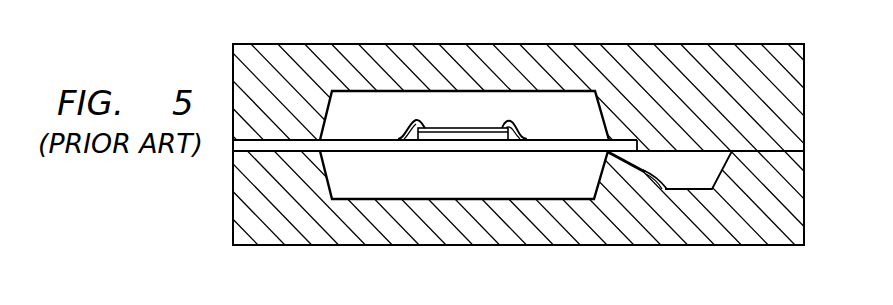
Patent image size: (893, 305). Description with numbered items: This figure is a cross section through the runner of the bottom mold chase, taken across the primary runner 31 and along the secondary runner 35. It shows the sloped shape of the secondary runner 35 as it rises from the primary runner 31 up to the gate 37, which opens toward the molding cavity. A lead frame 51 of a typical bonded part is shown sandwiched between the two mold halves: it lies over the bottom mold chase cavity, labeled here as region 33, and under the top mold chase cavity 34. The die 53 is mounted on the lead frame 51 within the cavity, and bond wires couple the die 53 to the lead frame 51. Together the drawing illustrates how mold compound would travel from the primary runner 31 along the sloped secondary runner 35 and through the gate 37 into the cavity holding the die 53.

The primary runner 31 is at (683, 190).
The lower mold half 33 is at (286, 214).
The top mold chase cavity 34 is at (286, 106).
The secondary runner 35 is at (645, 171).
The gate 37 is at (608, 153).
The lead frame 51 is at (262, 152).
The die 53 is at (487, 125).